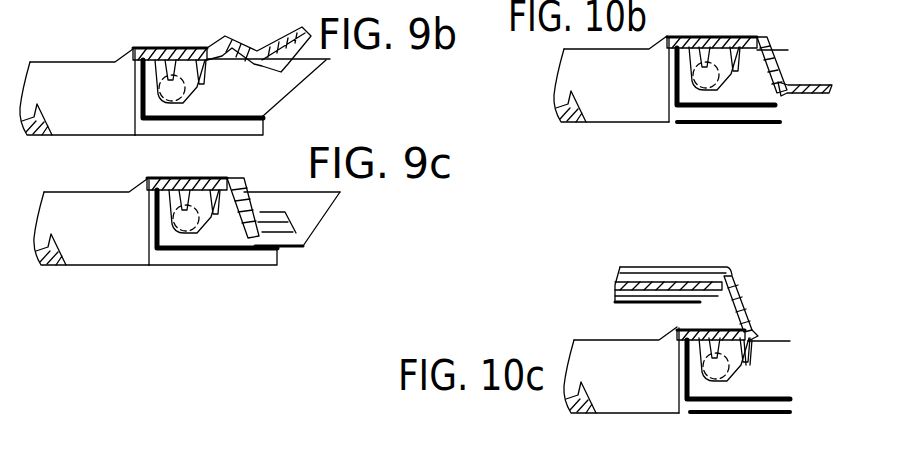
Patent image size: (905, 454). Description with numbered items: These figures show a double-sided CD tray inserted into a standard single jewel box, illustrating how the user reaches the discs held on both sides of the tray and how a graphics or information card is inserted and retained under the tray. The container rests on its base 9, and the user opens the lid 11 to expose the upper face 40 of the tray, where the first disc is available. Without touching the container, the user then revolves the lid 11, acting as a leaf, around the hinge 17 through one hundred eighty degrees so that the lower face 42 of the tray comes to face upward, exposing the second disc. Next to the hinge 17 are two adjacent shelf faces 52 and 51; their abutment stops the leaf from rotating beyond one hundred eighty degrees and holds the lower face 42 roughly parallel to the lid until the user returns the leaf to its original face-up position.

In FIG. 10b, the base 9 is at (755, 122).
In FIG. 10b, the lid 11 is at (617, 122).
In FIG. 10c, the lid 11 is at (635, 263).
In FIG. 10c, the hinge 17 is at (768, 328).
In FIG. 10b, the upper face 40 is at (804, 83).
In FIG. 10c, the lower face 42 is at (686, 253).
In FIG. 10b, the shelf face 51 is at (752, 44).
In FIG. 10c, the shelf face 51 is at (747, 337).
In FIG. 10b, the shelf face 52 is at (722, 47).
In FIG. 10c, the shelf face 52 is at (747, 343).